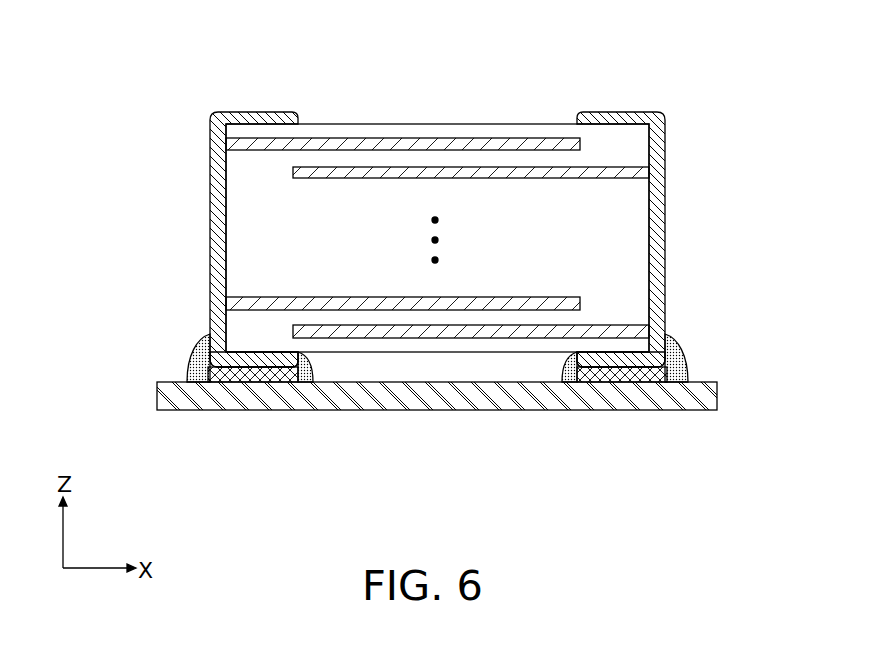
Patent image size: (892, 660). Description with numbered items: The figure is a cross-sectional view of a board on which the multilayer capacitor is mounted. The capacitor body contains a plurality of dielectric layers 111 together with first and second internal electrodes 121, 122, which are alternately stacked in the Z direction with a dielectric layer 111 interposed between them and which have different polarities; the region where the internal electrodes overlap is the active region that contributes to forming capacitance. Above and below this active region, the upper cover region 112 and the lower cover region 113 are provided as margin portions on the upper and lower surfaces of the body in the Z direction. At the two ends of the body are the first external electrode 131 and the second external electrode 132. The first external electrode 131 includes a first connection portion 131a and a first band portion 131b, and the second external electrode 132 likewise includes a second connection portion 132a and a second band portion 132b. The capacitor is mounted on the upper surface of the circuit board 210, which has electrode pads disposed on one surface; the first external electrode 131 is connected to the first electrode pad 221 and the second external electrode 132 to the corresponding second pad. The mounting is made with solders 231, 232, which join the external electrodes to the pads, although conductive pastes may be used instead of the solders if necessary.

The upper cover region 112 is at (445, 132).
The dielectric layer 111 is at (510, 320).
The lower cover region 113 is at (445, 345).
The first internal electrode 121 is at (273, 145).
The second internal electrode 122 is at (557, 330).
The first external electrode 131 is at (171, 239).
The first connection portion 131a is at (210, 258).
The first band portion 131b is at (260, 363).
The second external electrode 132 is at (701, 239).
The second connection portion 132a is at (667, 257).
The second band portion 132b is at (615, 363).
The circuit board 210 is at (350, 395).
The first electrode pad 221 is at (257, 378).
The solder 231 is at (193, 383).
The solder 232 is at (678, 375).